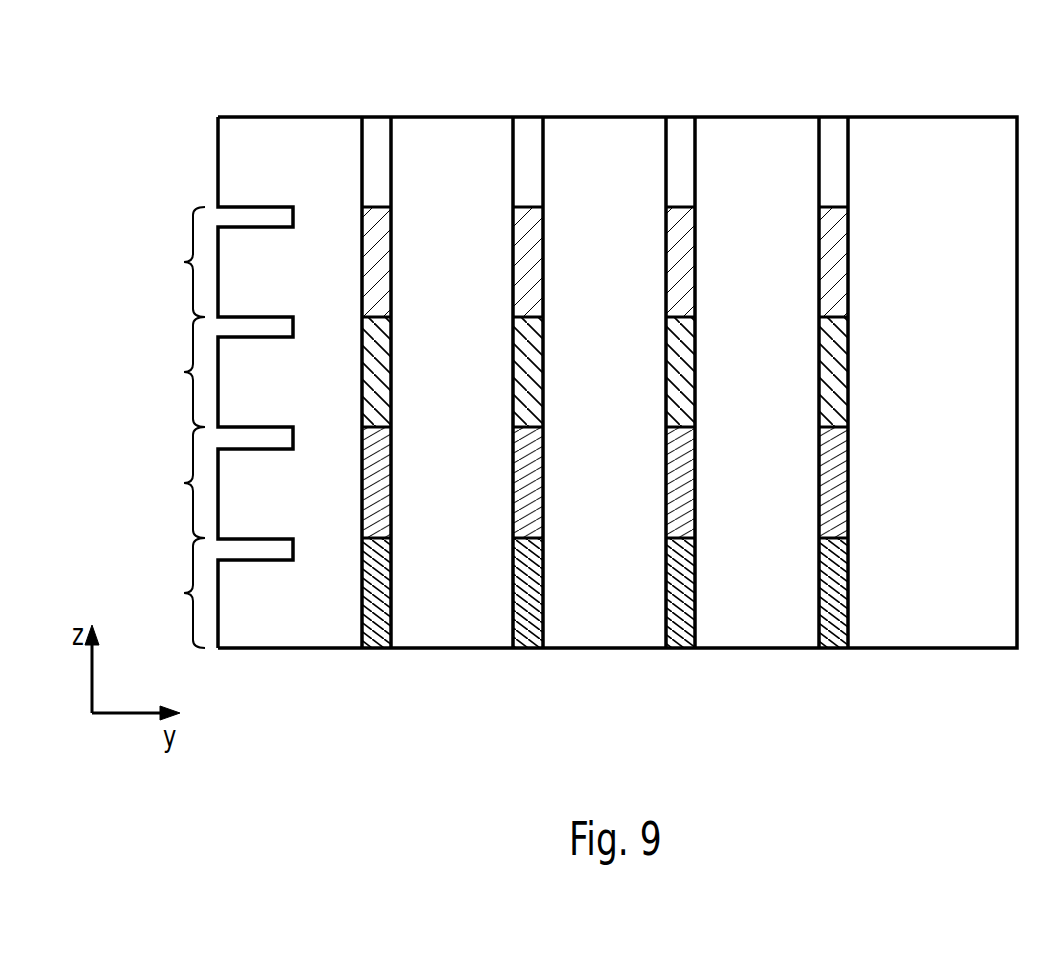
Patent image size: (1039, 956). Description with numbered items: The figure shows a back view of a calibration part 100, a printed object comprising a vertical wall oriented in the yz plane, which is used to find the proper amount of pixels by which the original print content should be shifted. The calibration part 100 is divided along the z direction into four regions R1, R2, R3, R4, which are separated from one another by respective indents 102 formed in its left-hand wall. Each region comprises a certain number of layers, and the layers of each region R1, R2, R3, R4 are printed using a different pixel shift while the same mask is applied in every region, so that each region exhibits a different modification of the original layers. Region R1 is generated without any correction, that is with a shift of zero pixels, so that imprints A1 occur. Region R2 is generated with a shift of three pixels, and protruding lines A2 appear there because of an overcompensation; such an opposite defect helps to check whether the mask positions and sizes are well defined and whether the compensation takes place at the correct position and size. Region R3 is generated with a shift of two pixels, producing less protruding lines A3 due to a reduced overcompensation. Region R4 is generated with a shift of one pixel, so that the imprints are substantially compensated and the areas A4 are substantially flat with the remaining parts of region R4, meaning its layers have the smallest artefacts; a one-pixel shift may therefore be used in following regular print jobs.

The calibration part 100 is at (615, 117).
The indent 102 is at (257, 207).
The imprints A1 is at (392, 597).
The protruding lines A2 is at (392, 484).
The less protruding lines A3 is at (392, 373).
The areas A4 is at (392, 263).
The region R1 is at (177, 593).
The region R2 is at (177, 482).
The region R3 is at (177, 372).
The region R4 is at (177, 262).